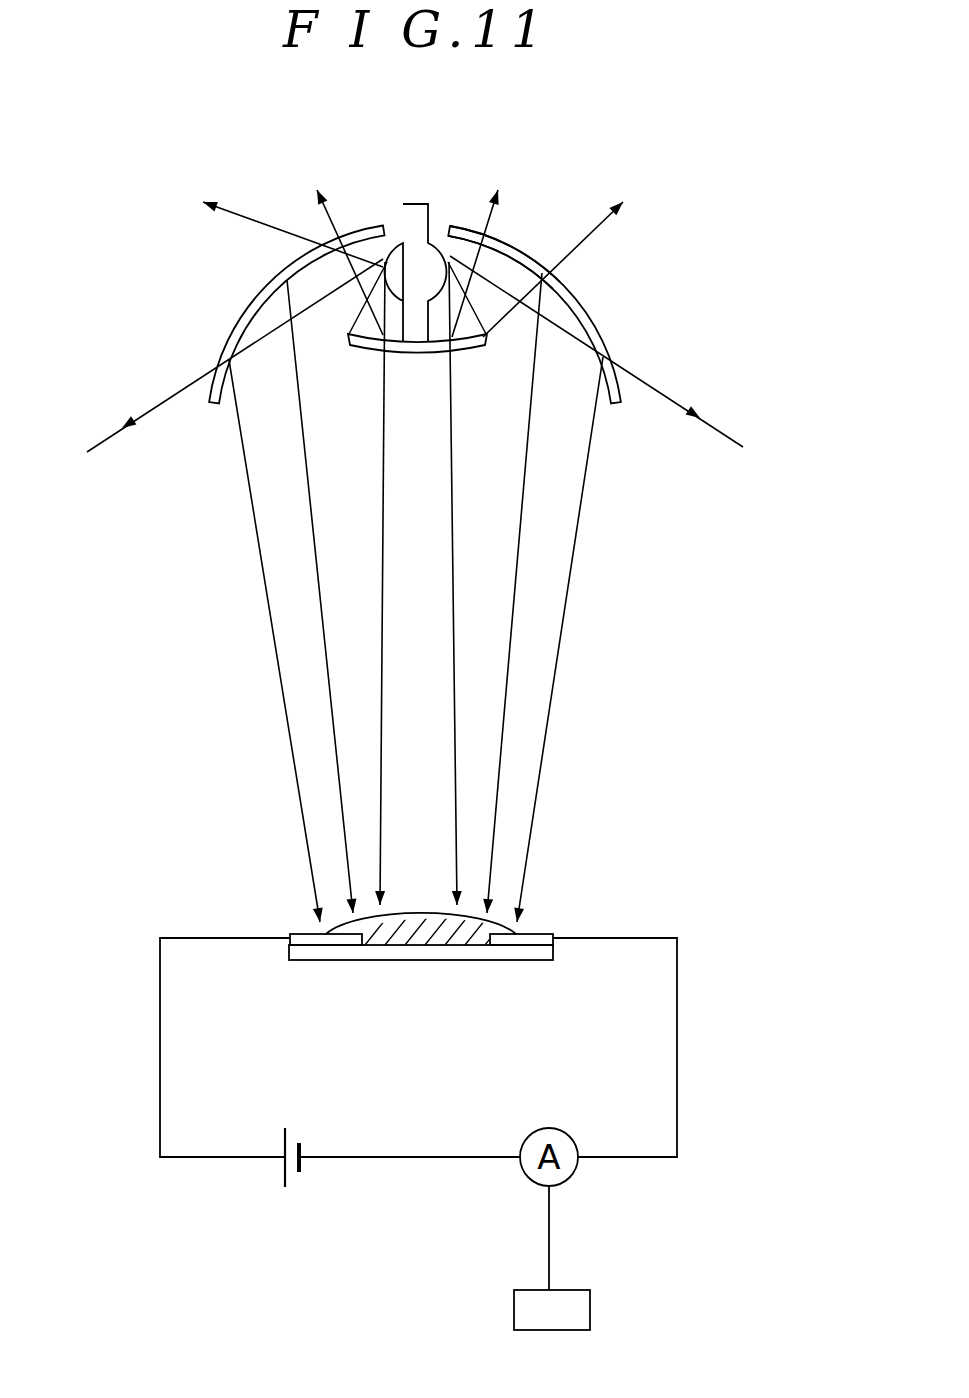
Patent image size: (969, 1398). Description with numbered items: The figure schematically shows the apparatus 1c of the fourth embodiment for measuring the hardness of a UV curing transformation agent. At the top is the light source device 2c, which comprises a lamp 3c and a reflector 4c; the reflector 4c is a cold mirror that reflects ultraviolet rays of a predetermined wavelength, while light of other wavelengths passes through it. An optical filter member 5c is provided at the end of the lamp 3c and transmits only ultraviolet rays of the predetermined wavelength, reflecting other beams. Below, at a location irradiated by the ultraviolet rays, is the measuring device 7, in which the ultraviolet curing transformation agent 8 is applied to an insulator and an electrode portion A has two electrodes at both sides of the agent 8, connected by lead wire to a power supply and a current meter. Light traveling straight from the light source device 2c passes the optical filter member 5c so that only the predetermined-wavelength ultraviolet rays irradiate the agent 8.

The apparatus for measuring the hardness of the UV curing transformation agent 1c is at (677, 302).
The light source device 2c is at (628, 357).
The lamp 3c is at (416, 212).
The reflector 4c is at (512, 237).
The optical filter member 5c is at (370, 349).
The measuring device 7 is at (598, 892).
The ultraviolet curing transformation agent 8 is at (350, 933).
The electrode portion A is at (547, 927).